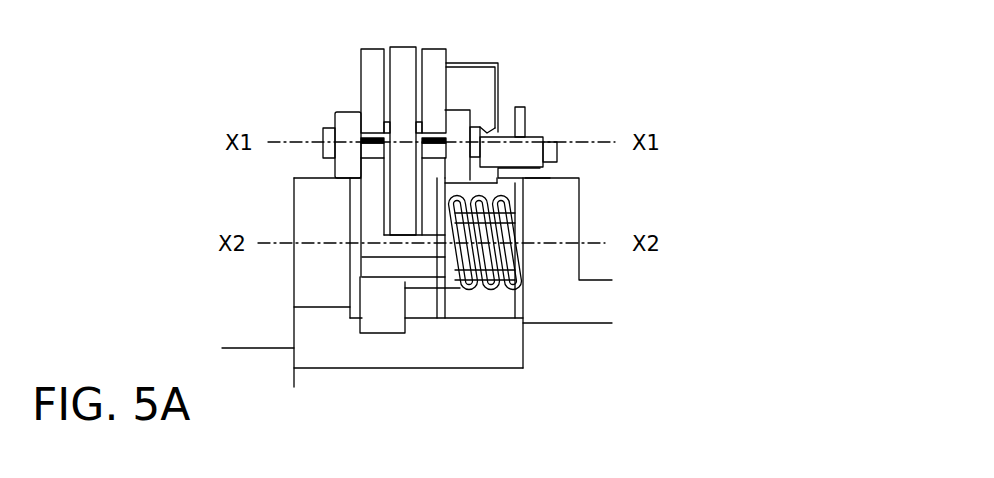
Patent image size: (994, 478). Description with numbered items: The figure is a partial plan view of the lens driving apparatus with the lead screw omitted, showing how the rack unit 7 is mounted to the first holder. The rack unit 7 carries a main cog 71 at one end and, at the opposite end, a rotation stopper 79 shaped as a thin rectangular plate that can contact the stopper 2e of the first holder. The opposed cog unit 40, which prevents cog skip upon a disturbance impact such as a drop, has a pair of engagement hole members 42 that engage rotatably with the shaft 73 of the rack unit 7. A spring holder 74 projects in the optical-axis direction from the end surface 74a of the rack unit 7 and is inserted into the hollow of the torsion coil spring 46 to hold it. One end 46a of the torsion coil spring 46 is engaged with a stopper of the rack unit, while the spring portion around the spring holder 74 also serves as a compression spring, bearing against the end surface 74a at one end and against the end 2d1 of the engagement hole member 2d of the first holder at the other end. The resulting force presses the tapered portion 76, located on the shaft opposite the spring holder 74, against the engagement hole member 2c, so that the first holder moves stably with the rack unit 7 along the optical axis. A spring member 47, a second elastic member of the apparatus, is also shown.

The spring member 47 is at (405, 65).
The rack unit 7 is at (470, 60).
The engagement hole members 42 is at (346, 117).
The opposed cog unit 40 is at (373, 72).
The main cog 71 is at (503, 90).
The shaft 73 is at (328, 130).
The one end of the torsion coil spring 46a is at (522, 121).
The tapered portion 76 is at (355, 260).
The spring holder 74 is at (505, 237).
The engagement hole member 2d is at (565, 232).
The torsion coil spring 46 is at (523, 279).
The engagement hole member 2c is at (308, 337).
The end of the engagement hole member 2d1 is at (525, 303).
The rotation stopper 79 is at (385, 307).
The end surface 74a is at (457, 310).
The stopper 2e is at (497, 343).